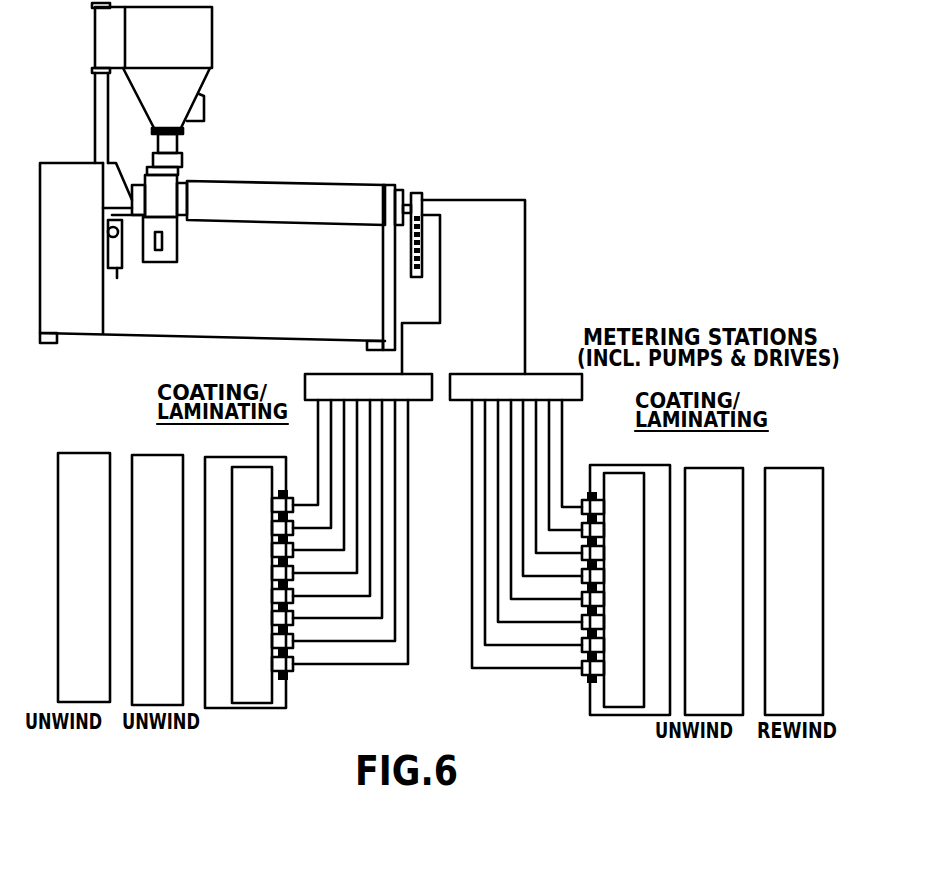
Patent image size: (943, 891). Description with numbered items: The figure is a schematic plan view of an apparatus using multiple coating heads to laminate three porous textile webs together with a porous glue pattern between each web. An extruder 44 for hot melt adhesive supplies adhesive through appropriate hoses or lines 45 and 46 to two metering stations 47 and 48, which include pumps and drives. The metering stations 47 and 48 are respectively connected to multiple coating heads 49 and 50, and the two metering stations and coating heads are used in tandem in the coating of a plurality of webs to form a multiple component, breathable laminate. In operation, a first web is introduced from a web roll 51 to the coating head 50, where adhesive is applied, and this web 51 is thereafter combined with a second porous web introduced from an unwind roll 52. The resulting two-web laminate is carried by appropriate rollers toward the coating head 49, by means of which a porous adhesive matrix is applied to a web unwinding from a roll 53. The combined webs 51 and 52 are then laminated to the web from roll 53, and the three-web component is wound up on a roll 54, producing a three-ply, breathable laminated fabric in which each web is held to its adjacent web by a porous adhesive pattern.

The extruder 44 is at (293, 152).
The hose or line 45 is at (525, 200).
The hose or line 46 is at (441, 285).
The metering station 47 is at (490, 378).
The metering station 48 is at (312, 378).
The coating head 49 is at (610, 677).
The coating head 50 is at (255, 687).
The web roll 51 is at (90, 628).
The unwind roll 52 is at (163, 637).
The roll 53 is at (721, 620).
The roll 54 is at (800, 614).